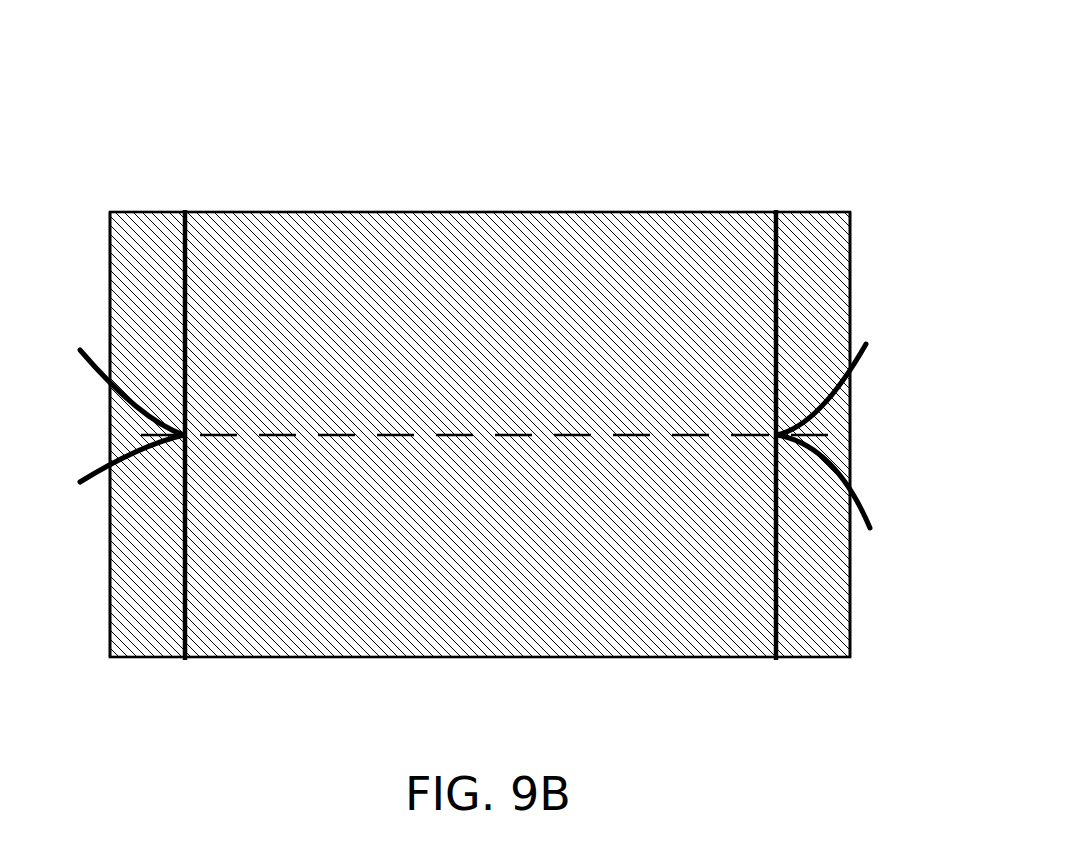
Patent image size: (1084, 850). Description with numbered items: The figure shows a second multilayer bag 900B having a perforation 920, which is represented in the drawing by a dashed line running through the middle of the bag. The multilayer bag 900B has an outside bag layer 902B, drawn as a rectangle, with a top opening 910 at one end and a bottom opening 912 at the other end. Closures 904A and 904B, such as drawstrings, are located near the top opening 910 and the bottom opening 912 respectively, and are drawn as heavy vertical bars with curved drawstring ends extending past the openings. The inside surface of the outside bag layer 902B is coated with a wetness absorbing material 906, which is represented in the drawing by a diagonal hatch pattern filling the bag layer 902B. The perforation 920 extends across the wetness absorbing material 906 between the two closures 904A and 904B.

The second multilayer bag 900B is at (522, 78).
The outside bag layer 902B is at (615, 657).
The closure 904A is at (192, 240).
The closure 904B is at (770, 240).
The wetness absorbing material 906 is at (515, 248).
The top opening 910 is at (110, 228).
The bottom opening 912 is at (850, 635).
The perforation 920 is at (295, 437).